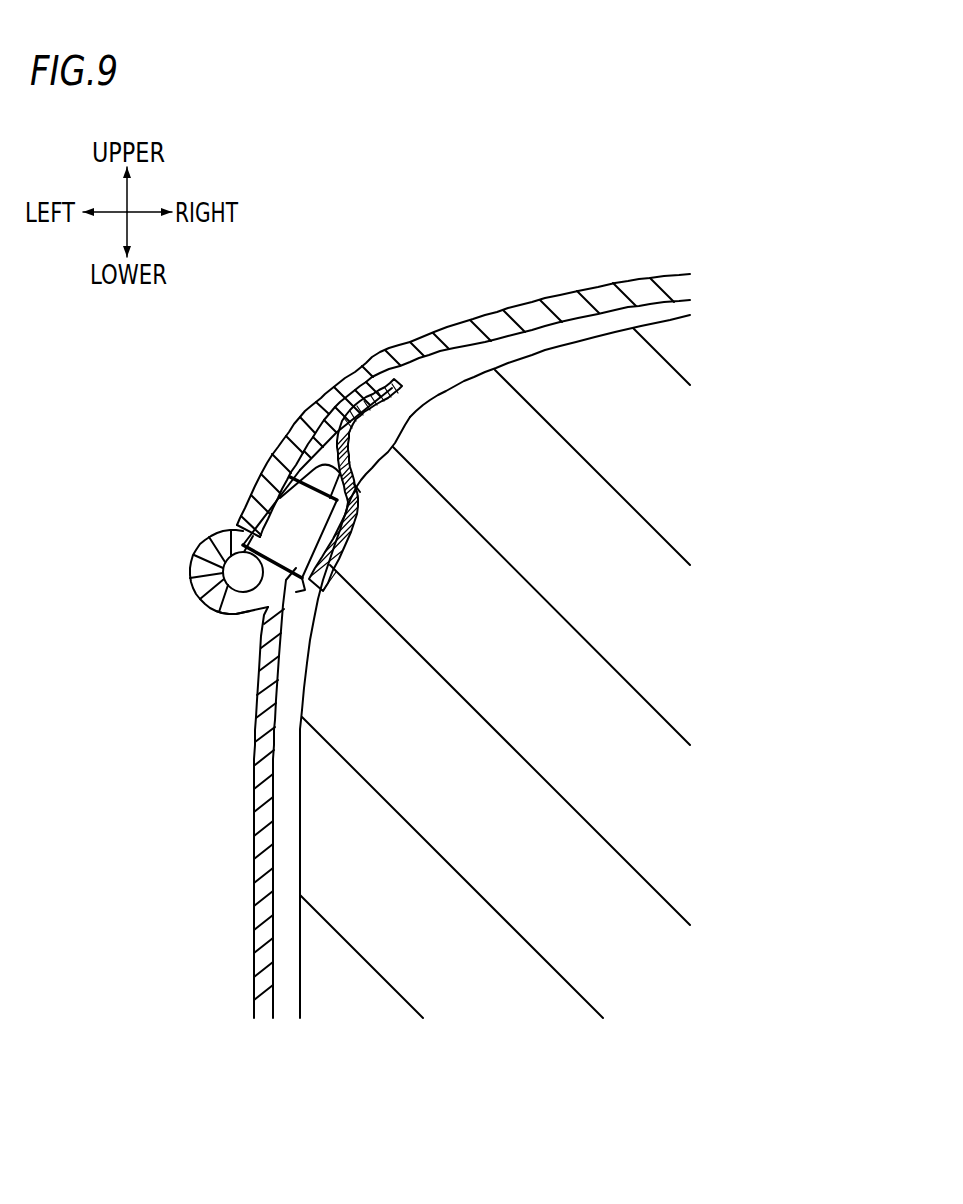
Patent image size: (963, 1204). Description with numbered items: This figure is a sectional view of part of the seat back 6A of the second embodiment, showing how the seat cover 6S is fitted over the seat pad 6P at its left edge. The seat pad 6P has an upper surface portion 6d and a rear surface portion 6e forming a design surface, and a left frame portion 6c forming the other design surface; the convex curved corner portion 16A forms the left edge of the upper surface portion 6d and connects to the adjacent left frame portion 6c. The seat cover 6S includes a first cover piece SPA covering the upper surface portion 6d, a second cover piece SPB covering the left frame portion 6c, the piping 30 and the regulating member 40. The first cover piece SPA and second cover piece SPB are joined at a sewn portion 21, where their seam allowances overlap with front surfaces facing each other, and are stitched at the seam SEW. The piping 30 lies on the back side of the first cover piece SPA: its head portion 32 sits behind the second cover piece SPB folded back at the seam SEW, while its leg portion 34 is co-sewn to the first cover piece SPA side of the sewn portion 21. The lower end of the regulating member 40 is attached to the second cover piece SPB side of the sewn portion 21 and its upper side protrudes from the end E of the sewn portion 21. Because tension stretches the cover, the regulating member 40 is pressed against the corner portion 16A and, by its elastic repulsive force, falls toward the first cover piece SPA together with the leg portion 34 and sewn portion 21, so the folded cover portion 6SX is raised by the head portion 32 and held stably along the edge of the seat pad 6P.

The seat back 6A is at (612, 235).
The seat cover 6S is at (387, 627).
The first cover piece SPA is at (415, 335).
The second cover piece SPB is at (252, 927).
The seat pad 6P is at (556, 704).
The left frame portion 6c is at (298, 877).
The upper surface portion 6d is at (543, 347).
The rear surface portion 6e is at (275, 830).
The piping 30 is at (229, 594).
The head portion 32 is at (243, 572).
The seam SEW is at (228, 525).
The cover portion 6SX is at (233, 620).
The regulating member 40 is at (318, 420).
The sewn portion 21 is at (270, 478).
The leg portion 34 is at (250, 505).
The corner portion 16A is at (350, 514).
The end of the sewn portion E is at (355, 484).